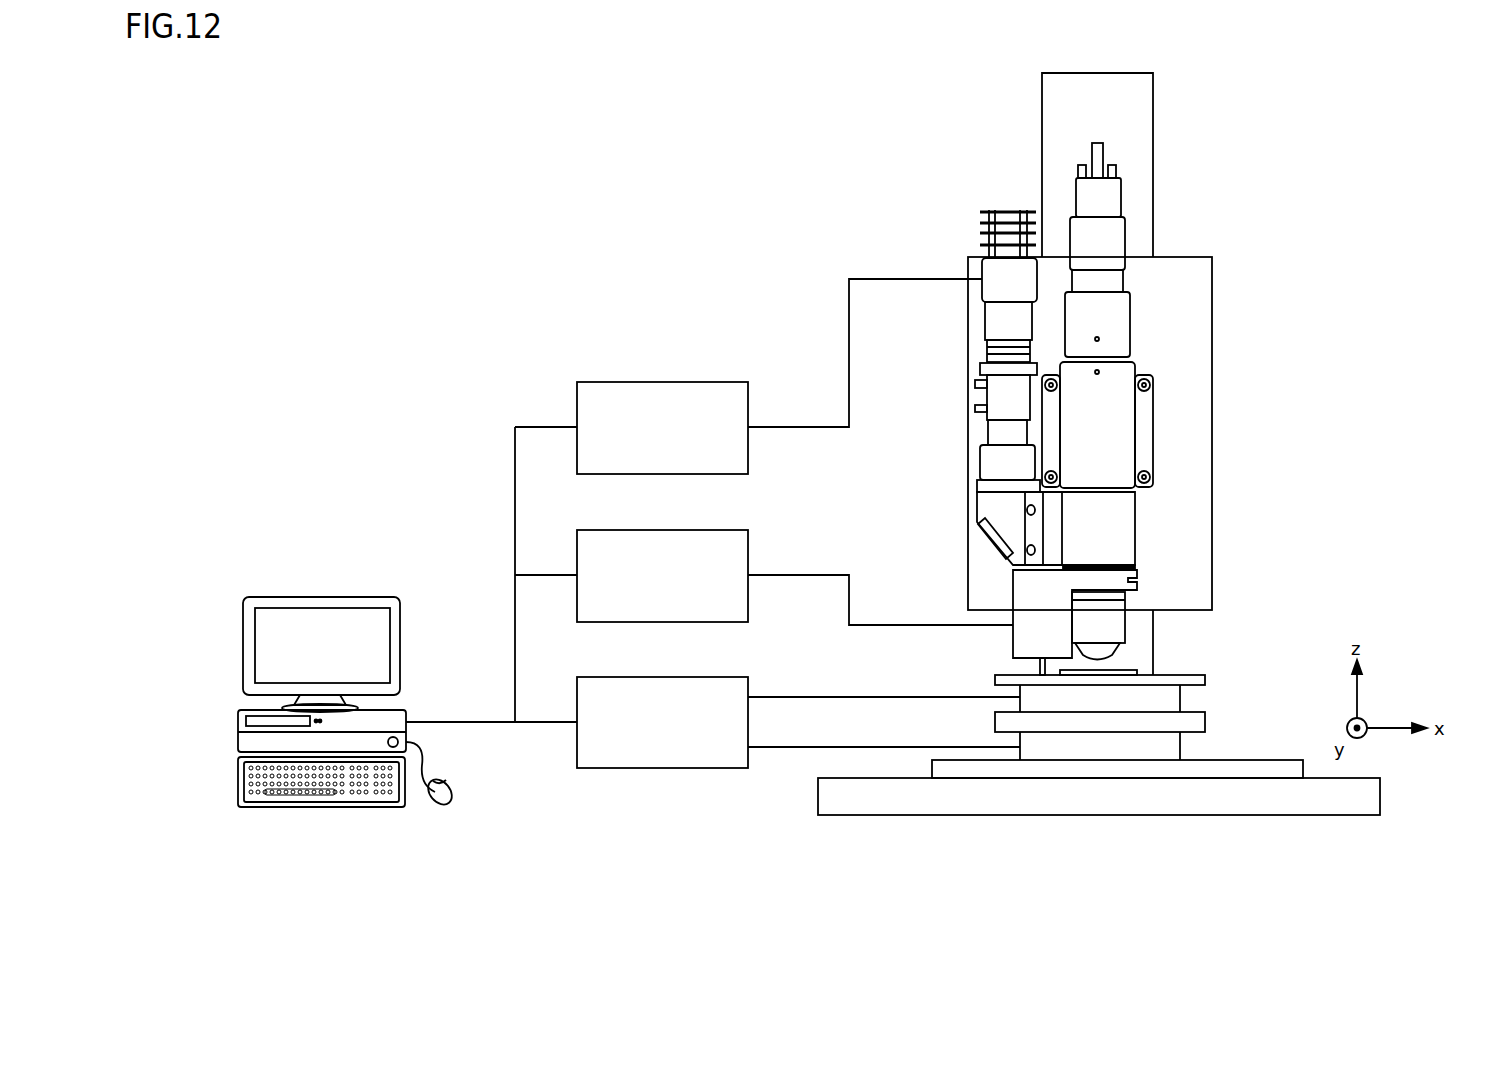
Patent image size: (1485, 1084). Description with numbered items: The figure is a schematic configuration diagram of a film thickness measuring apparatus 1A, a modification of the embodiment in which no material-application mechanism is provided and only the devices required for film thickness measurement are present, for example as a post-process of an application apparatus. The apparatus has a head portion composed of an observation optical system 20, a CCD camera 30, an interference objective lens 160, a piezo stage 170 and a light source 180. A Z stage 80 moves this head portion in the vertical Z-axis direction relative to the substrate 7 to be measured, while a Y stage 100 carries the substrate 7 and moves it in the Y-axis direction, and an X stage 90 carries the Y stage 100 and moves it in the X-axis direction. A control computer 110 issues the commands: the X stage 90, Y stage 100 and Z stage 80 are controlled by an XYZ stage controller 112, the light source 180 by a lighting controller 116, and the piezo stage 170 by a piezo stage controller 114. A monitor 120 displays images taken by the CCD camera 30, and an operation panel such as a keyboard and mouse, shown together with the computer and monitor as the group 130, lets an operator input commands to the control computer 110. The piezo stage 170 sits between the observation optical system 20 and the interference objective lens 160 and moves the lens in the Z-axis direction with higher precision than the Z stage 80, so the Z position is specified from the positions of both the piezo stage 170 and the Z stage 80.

The film thickness measuring apparatus 1A is at (302, 145).
The substrate 7 is at (1130, 672).
The observation optical system 20 is at (1118, 424).
The CCD camera 30 is at (1108, 230).
The Z stage 80 is at (1185, 257).
The X stage 90 is at (1168, 748).
The Y stage 100 is at (1168, 700).
The control computer 110 is at (286, 731).
The XYZ stage controller 112 is at (707, 677).
The piezo stage controller 114 is at (707, 530).
The lighting controller 116 is at (707, 382).
The monitor 120 is at (365, 597).
The control unit 130 is at (312, 715).
The interference objective lens 160 is at (1112, 625).
The piezo stage 170 is at (1013, 645).
The light source 180 is at (985, 268).